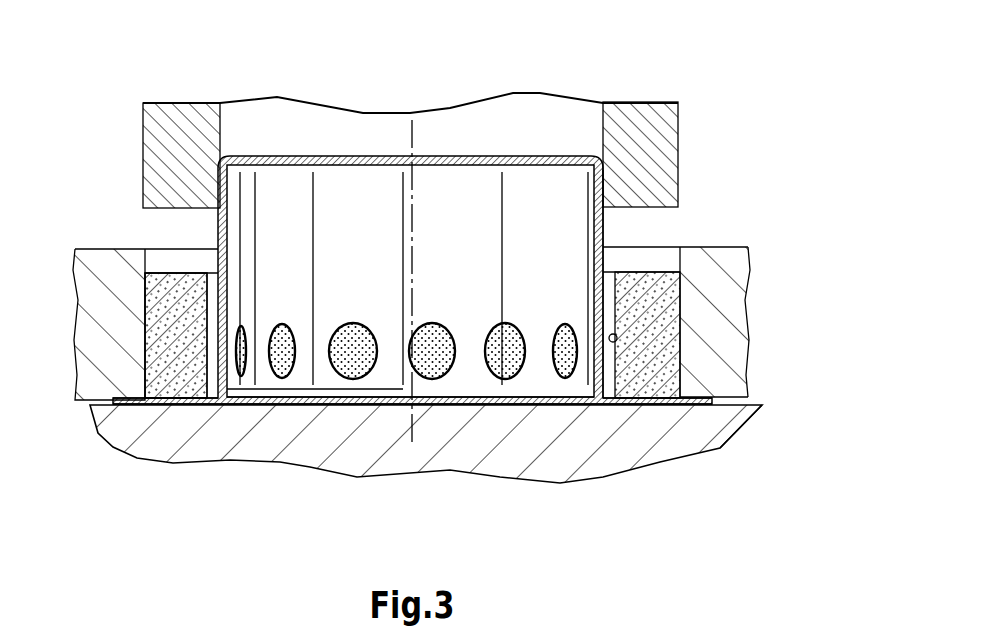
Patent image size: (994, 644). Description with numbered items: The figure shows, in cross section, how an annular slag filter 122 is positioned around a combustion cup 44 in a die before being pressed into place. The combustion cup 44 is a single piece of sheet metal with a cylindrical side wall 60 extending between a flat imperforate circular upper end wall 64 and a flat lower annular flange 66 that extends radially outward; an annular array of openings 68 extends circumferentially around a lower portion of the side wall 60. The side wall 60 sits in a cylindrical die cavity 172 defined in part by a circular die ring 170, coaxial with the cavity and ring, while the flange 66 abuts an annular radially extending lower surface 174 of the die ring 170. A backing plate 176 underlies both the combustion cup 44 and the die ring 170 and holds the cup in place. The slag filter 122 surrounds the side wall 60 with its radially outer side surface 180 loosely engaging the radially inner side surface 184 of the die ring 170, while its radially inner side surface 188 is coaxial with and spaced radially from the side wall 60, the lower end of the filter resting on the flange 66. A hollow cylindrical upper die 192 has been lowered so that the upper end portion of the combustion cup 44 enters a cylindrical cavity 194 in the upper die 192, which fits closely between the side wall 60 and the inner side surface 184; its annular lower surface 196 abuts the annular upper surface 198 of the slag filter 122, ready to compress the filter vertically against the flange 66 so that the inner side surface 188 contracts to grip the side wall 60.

The combustion cup 44 is at (412, 263).
The cylindrical side wall 60 is at (595, 219).
The upper end wall 64 is at (488, 156).
The lower annular flange 66 is at (672, 407).
The openings 68 is at (350, 323).
The slag filter 122 is at (183, 272).
The die ring 170 is at (426, 274).
The die cavity 172 is at (653, 256).
The lower surface 174 is at (736, 408).
The backing plate 176 is at (310, 442).
The radially outer side surface 180 is at (145, 360).
The radially inner side surface 184 is at (150, 248).
The radially inner side surface 188 is at (620, 340).
The upper die 192 is at (675, 132).
The cylindrical cavity 194 is at (273, 125).
The lower surface 196 is at (655, 207).
The upper surface 198 is at (157, 272).